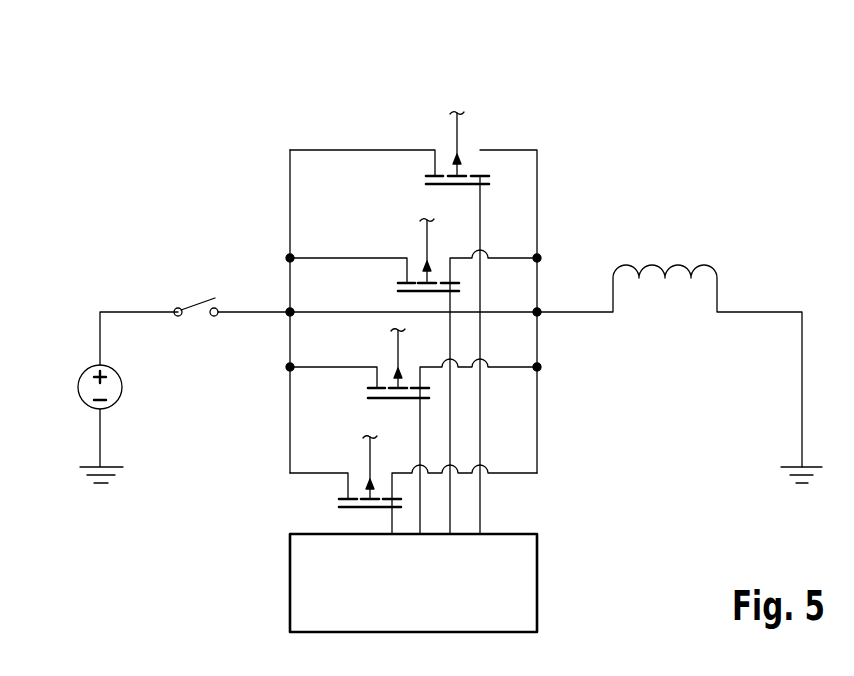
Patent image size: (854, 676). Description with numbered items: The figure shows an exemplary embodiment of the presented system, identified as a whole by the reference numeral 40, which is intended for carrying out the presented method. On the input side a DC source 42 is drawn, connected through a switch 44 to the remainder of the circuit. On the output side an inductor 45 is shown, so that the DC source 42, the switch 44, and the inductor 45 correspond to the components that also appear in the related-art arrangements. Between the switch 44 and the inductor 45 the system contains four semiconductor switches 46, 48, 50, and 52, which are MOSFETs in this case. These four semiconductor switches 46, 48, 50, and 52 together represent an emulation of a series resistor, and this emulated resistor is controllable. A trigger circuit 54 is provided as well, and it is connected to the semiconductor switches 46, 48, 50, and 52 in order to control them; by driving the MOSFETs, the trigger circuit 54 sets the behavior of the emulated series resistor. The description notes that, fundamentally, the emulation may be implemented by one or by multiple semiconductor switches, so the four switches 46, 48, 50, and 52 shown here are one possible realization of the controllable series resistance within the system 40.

The system 40 is at (635, 140).
The DC source 42 is at (82, 373).
The switch 44 is at (200, 303).
The inductor 45 is at (675, 263).
The semiconductor switch 46 is at (472, 140).
The semiconductor switch 48 is at (412, 245).
The semiconductor switch 50 is at (382, 353).
The semiconductor switch 52 is at (353, 463).
The trigger circuit 54 is at (520, 583).